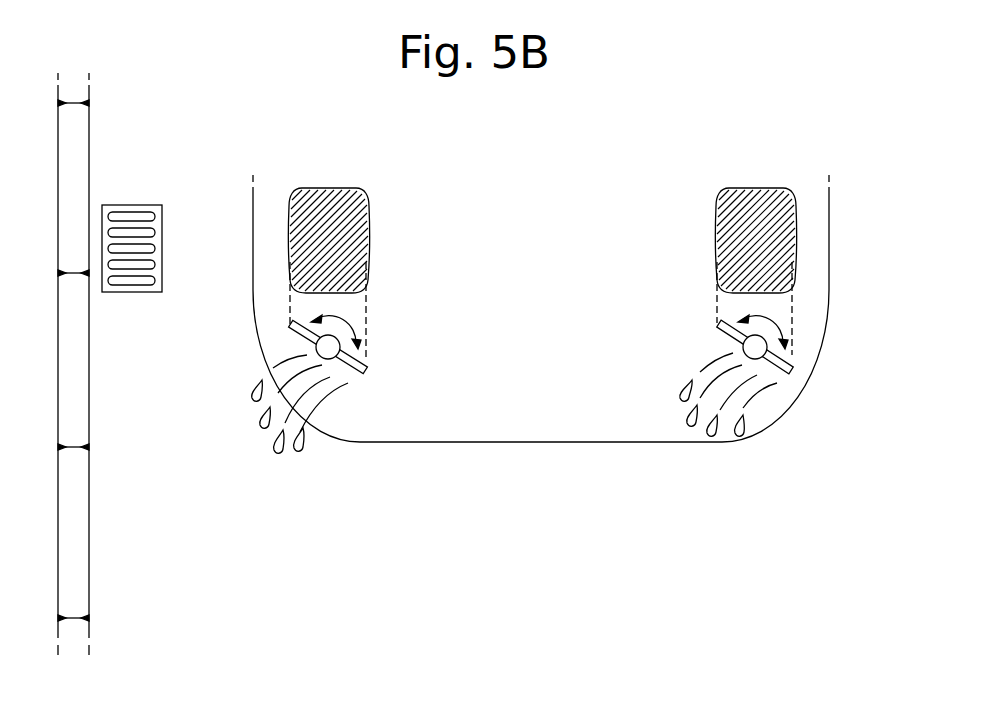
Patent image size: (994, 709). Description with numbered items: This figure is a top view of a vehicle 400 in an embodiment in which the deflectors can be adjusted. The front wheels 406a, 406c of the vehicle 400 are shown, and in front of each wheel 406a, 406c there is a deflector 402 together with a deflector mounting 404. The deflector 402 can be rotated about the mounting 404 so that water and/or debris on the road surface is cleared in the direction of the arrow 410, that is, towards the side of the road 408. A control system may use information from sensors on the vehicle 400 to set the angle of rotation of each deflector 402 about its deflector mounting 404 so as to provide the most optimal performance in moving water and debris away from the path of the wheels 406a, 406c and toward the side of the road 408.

The vehicle 400 is at (541, 433).
The deflector 402 is at (366, 372).
The deflector mounting 404 is at (316, 347).
The front wheel 406a is at (332, 221).
The front wheel 406c is at (745, 217).
The side of the road 408 is at (117, 497).
The arrow 410 is at (176, 319).